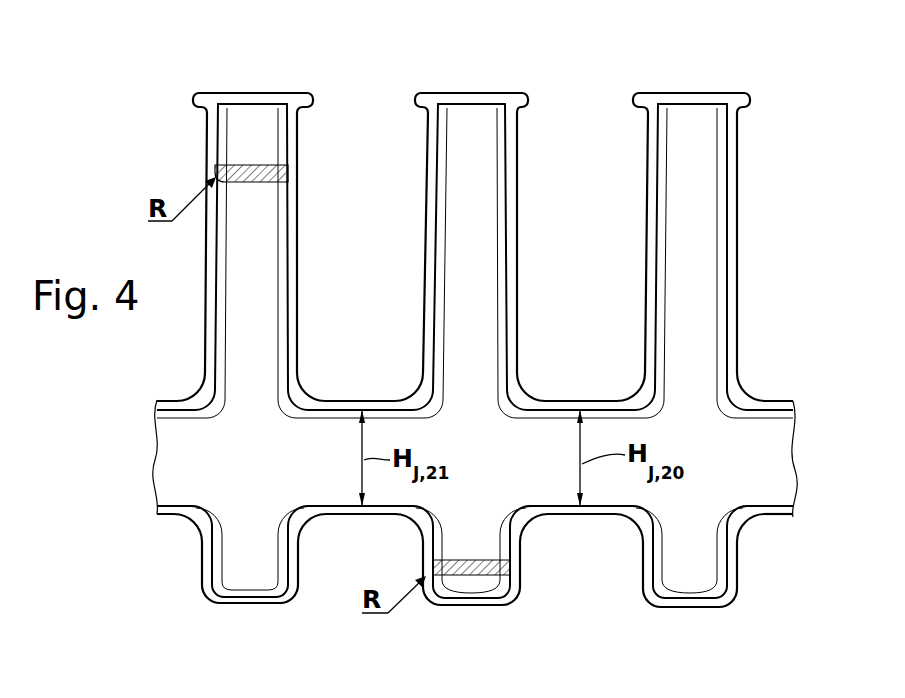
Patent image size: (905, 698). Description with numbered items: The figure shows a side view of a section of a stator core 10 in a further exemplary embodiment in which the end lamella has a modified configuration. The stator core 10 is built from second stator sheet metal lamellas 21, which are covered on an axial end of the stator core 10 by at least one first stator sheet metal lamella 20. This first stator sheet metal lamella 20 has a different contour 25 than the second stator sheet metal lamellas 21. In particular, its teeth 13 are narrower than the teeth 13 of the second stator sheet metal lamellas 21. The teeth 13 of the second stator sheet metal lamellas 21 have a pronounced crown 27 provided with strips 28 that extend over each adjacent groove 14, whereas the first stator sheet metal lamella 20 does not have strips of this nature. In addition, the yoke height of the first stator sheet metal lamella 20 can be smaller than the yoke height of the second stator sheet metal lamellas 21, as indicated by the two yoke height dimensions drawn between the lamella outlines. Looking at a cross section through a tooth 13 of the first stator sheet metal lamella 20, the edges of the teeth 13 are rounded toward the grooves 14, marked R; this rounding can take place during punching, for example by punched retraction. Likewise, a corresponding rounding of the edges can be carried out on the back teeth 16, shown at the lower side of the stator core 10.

The stator core 10 is at (506, 78).
The teeth 13 is at (693, 243).
The groove 14 is at (380, 262).
The back teeth 16 is at (690, 567).
The first stator sheet metal lamella 20 is at (690, 113).
The second stator sheet metal lamellas 21 is at (643, 103).
The contour 25 is at (733, 175).
The crown 27 is at (413, 86).
The strips 28 is at (420, 108).